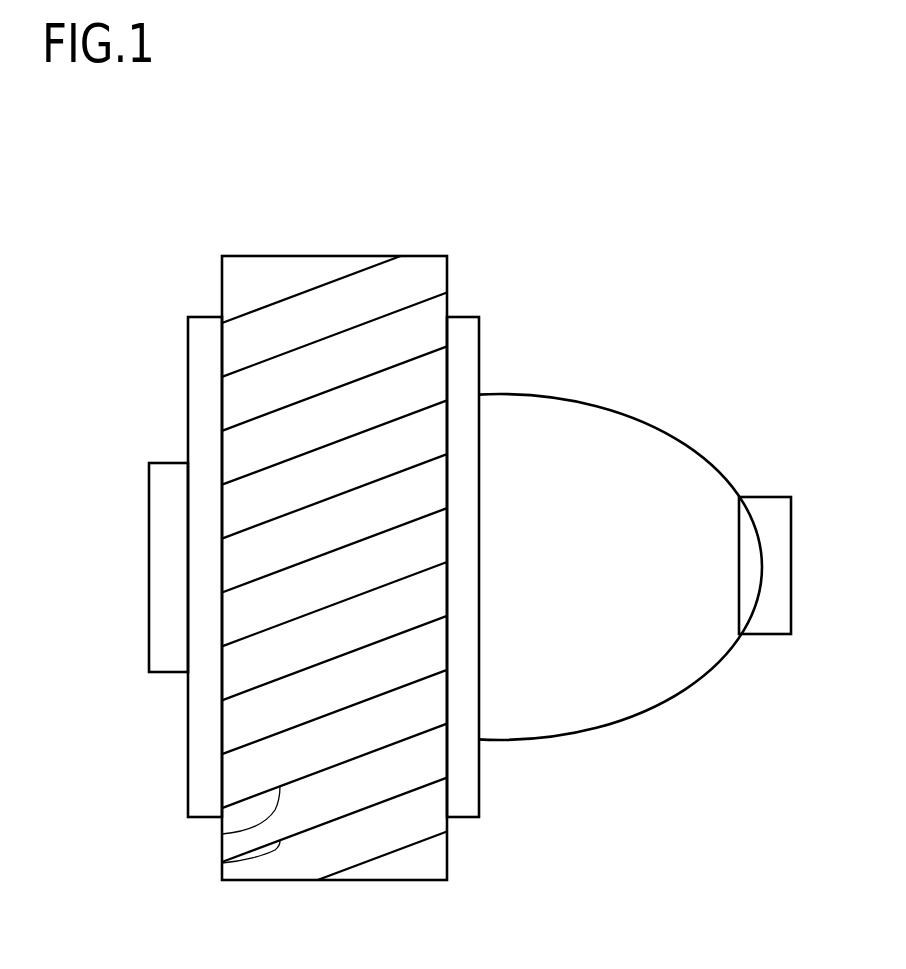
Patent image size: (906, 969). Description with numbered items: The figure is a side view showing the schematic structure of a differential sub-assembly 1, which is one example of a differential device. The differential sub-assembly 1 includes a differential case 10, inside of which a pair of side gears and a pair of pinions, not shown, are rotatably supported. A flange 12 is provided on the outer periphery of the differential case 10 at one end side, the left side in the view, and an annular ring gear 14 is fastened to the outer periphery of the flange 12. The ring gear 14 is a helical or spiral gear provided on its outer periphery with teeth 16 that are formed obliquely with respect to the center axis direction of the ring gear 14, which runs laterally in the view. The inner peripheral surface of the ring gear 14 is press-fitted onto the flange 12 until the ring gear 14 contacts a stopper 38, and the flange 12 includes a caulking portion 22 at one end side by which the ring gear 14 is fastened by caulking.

The differential sub-assembly 1 is at (447, 177).
The differential case 10 is at (592, 410).
The flange 12 is at (160, 567).
The ring gear 14 is at (448, 272).
The teeth 16 is at (222, 834).
The caulking portion 22 is at (200, 405).
The stopper 38 is at (468, 344).